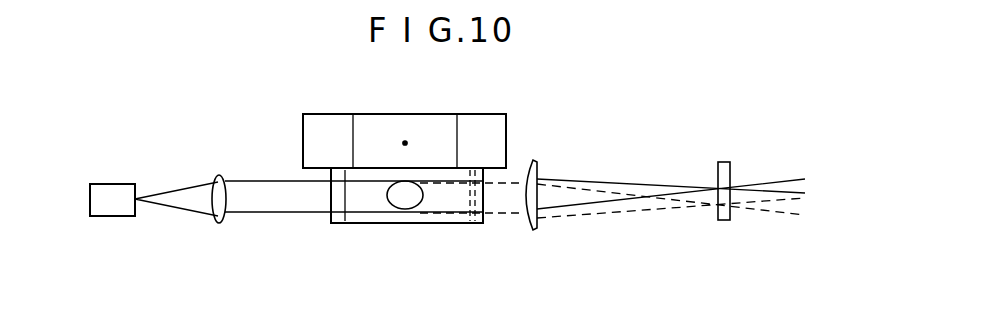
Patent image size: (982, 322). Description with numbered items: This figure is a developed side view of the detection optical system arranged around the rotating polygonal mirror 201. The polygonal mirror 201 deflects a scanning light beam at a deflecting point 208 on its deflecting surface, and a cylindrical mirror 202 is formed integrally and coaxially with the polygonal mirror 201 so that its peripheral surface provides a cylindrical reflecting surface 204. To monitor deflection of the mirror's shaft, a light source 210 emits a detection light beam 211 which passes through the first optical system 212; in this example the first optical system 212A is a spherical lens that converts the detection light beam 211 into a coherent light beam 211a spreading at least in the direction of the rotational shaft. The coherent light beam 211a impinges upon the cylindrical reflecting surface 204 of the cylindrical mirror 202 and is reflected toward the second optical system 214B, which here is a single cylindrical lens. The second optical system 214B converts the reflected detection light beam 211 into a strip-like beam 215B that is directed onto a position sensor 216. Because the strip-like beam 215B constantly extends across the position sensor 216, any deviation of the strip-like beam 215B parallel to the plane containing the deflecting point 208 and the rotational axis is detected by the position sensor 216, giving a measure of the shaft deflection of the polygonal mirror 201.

The light source 210 is at (122, 218).
The detection light beam 211 is at (191, 211).
The first optical system 212A is at (221, 225).
The coherent light beam 211a is at (294, 214).
The rotating polygonal mirror 201 is at (500, 113).
The deflecting point 208 is at (405, 143).
The cylindrical mirror 202 is at (354, 224).
The first optical system 212 is at (407, 198).
The cylindrical reflecting surface 204 is at (447, 225).
The second optical system 214B is at (531, 231).
The strip-like beam 215B is at (716, 186).
The position sensor 216 is at (737, 168).